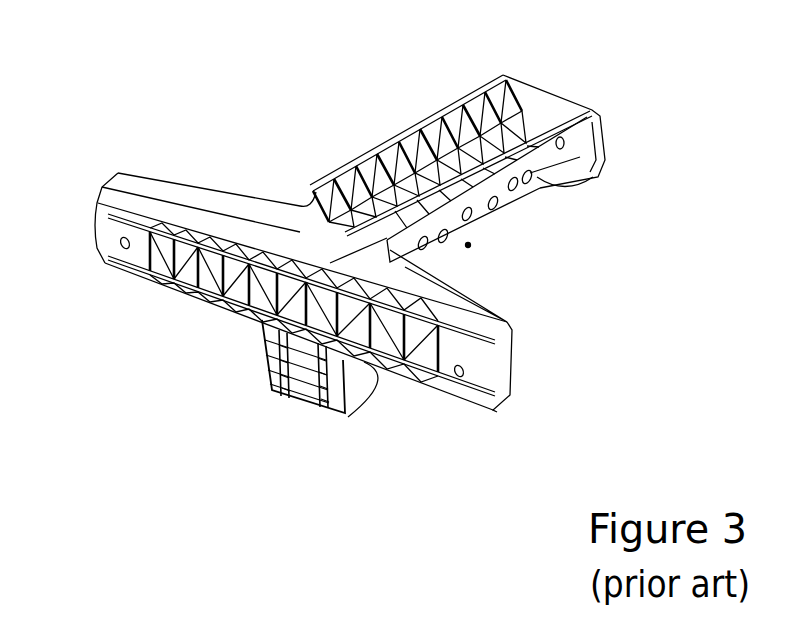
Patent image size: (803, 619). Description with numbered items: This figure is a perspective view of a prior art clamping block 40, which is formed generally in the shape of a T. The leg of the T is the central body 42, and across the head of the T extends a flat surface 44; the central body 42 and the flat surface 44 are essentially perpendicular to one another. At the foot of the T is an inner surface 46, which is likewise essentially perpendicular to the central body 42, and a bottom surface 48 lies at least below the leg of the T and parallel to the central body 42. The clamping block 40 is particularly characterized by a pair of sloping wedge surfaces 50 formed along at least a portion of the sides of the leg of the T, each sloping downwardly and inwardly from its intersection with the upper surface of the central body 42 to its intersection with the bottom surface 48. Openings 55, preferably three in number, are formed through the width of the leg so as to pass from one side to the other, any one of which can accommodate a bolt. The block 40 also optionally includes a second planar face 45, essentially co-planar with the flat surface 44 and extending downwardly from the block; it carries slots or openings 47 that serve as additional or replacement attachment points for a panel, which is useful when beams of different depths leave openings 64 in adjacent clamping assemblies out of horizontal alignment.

The clamping block 40 is at (605, 270).
The central body 42 is at (338, 188).
The flat surface 44 is at (137, 268).
The second planar face 45 is at (348, 417).
The inner surface 46 is at (596, 97).
The slots or openings 47 is at (272, 390).
The bottom surface 48 is at (468, 246).
The sloping wedge surfaces 50 is at (523, 192).
The openings 55 is at (527, 198).
The openings 64 is at (119, 246).